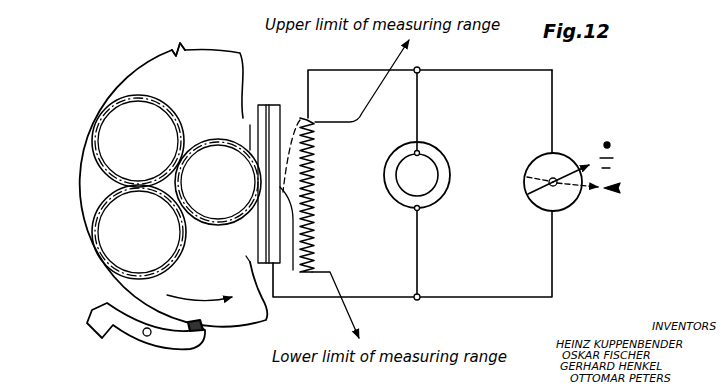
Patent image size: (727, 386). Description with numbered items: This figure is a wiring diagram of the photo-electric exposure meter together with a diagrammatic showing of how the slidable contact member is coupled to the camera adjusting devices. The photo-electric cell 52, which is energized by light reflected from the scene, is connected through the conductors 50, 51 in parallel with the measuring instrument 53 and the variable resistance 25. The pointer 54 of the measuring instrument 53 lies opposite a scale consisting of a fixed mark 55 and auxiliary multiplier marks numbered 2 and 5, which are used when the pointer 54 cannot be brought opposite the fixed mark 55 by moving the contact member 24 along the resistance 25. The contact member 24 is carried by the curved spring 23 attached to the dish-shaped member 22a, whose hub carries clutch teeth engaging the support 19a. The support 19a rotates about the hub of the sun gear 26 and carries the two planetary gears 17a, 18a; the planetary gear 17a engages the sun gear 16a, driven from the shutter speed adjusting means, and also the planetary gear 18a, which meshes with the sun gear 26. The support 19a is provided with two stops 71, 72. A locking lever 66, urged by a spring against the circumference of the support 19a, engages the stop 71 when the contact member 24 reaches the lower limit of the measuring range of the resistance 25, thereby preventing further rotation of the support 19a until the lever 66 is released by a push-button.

The auxiliary multiplier mark 2 is at (618, 164).
The auxiliary multiplier mark 5 is at (614, 157).
The sun gear 16a is at (208, 228).
The planetary gear 17a is at (97, 243).
The planetary gear 18a is at (95, 155).
The support 19a is at (108, 275).
The dish-shaped member 22a is at (270, 113).
The curved spring 23 is at (316, 225).
The contact member 24 is at (302, 119).
The variable resistance 25 is at (316, 174).
The sun gear 26 is at (232, 238).
The conductor 50 is at (372, 298).
The conductor 51 is at (358, 68).
The photo-electric cell 52 is at (443, 188).
The measuring instrument 53 is at (543, 210).
The pointer 54 is at (572, 181).
The fixed mark 55 is at (617, 192).
The locking lever 66 is at (178, 342).
The stop 71 is at (197, 328).
The stop 72 is at (178, 50).